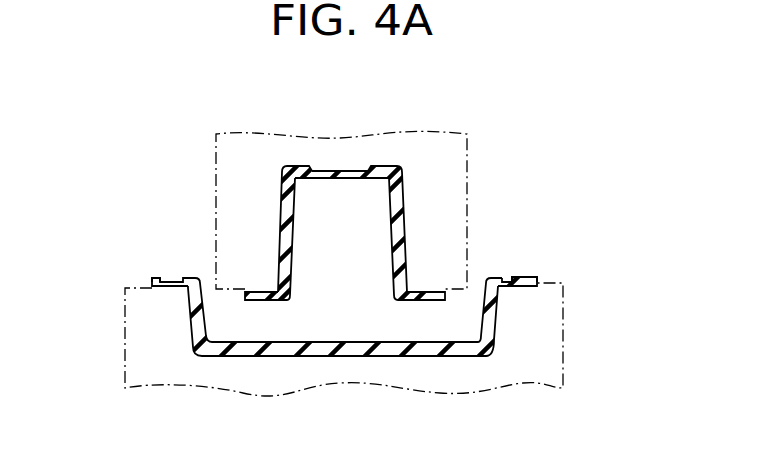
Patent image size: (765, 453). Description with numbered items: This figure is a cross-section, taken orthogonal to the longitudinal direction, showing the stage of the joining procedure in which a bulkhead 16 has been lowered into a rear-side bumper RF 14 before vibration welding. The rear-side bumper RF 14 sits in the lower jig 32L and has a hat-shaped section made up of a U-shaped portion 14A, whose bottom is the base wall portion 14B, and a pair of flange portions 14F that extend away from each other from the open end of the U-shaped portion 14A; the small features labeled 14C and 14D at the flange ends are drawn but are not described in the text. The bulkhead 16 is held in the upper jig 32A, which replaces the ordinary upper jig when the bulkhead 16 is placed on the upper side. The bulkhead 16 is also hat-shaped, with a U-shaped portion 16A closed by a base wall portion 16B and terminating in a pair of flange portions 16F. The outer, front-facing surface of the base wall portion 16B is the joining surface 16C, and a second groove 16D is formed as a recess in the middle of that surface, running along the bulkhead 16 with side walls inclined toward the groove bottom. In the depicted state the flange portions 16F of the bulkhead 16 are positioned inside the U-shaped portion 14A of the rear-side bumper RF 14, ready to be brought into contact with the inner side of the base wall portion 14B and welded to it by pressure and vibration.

The rear-side bumper RF 14 is at (393, 276).
The U-shaped portion 14A is at (510, 324).
The base wall portion 14B is at (341, 342).
The flange of lower panel 14C is at (157, 255).
The protrusion on flange 14D is at (173, 278).
The flange portions 14F is at (161, 297).
The bulkhead 16 is at (339, 231).
The U-shaped portion 16A is at (266, 189).
The base wall portion 16B is at (338, 143).
The joining surface 16C is at (308, 149).
The second groove 16D is at (345, 168).
The flange portions 16F is at (262, 289).
The upper jig 32A is at (470, 205).
The lower jig 32L is at (563, 363).